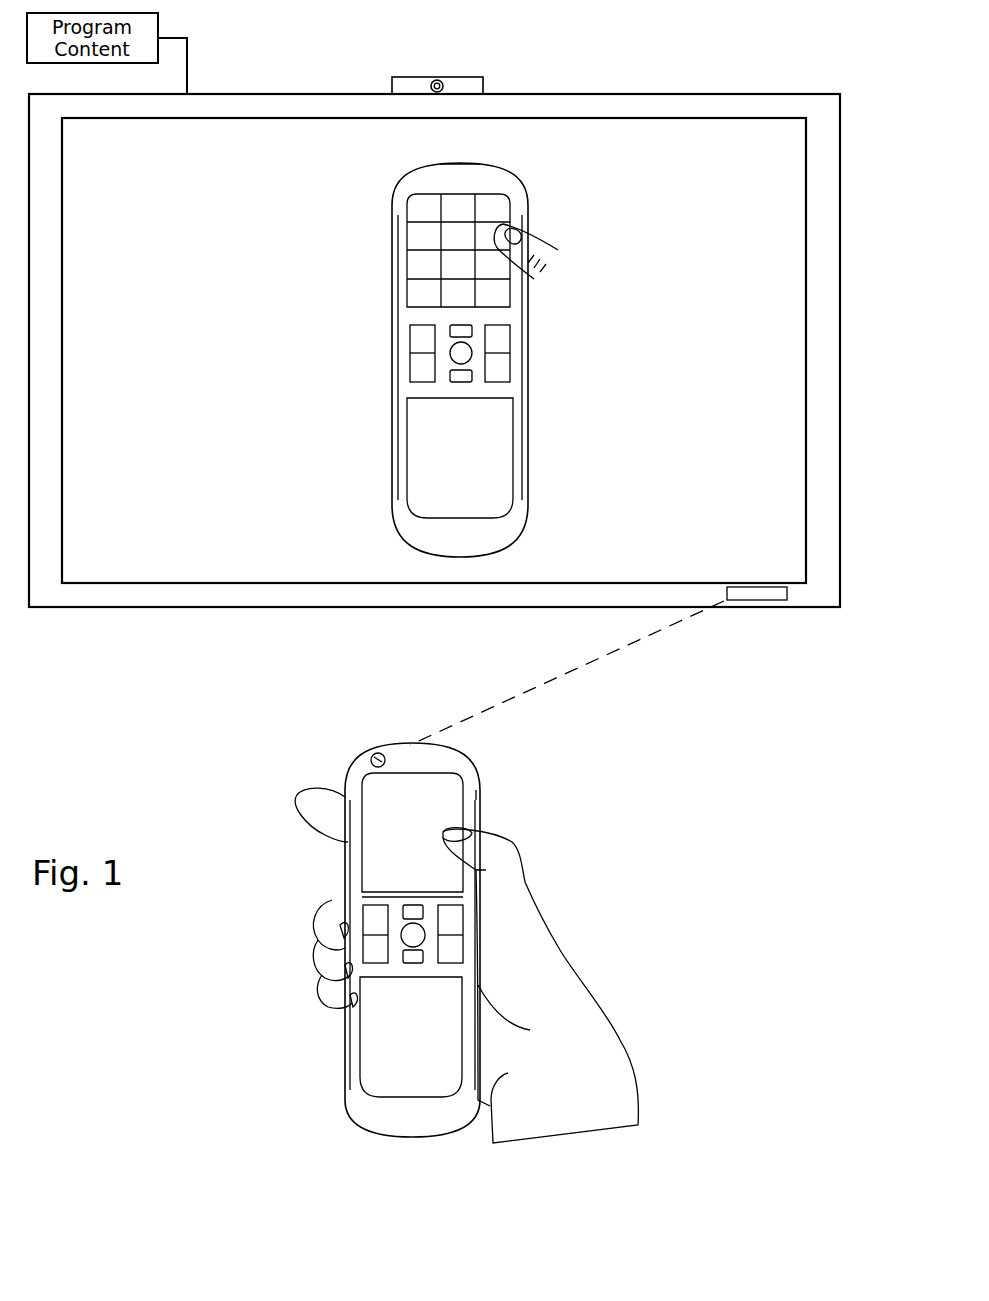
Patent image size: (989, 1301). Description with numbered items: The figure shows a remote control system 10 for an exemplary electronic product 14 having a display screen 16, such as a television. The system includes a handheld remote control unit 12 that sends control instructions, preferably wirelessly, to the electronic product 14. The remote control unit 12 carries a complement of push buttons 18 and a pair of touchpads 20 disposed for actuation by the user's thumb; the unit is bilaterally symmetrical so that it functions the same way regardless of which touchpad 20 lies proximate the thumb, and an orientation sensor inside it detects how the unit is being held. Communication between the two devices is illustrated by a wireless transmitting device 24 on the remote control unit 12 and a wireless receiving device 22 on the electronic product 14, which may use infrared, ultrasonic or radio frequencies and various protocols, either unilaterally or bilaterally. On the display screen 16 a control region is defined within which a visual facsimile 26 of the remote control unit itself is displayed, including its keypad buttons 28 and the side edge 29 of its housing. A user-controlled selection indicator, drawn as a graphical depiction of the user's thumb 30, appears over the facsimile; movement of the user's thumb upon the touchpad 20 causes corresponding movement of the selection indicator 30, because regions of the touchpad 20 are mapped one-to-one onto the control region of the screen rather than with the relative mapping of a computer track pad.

The remote control system 10 is at (632, 674).
The handheld remote control unit 12 is at (406, 923).
The electronic product 14 is at (183, 609).
The display screen 16 is at (716, 293).
The push buttons 18 is at (426, 893).
The touchpads 20 is at (428, 800).
The wireless receiving device 22 is at (726, 600).
The wireless transmitting device 24 is at (371, 760).
The visual facsimile of the remote control unit 26 is at (503, 188).
The virtual keypad button 28 is at (414, 206).
The housing side edge 29 is at (481, 791).
The graphical depiction of the user's thumb 30 is at (545, 231).